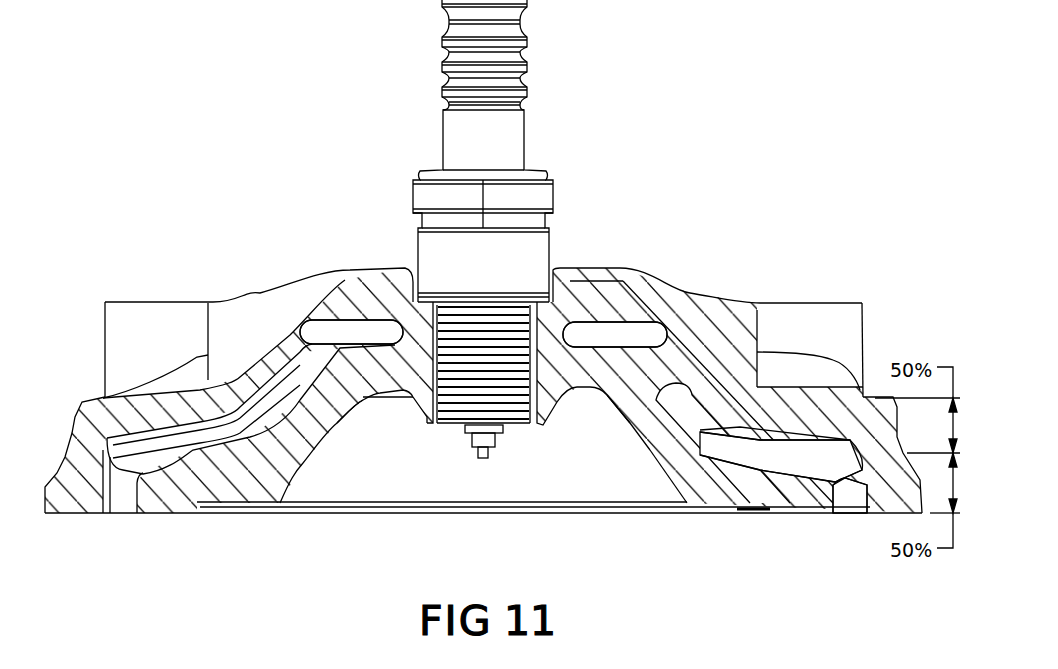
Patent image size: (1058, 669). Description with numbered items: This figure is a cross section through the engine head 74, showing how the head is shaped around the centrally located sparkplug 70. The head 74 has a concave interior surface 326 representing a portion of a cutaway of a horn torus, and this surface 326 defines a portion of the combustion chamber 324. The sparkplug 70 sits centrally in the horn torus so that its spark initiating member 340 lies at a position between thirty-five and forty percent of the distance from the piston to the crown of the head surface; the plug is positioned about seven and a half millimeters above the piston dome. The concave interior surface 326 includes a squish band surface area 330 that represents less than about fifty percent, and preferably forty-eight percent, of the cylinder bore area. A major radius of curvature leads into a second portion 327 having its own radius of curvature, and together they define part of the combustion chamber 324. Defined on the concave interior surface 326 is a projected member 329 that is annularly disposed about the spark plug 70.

The sparkplug 70 is at (460, 142).
The engine head 74 is at (653, 303).
The combustion chamber 324 is at (397, 470).
The concave interior surface 326 is at (665, 497).
The second portion 327 is at (650, 450).
The projected member 329 is at (380, 395).
The squish band surface area 330 is at (740, 510).
The spark initiating member 340 is at (483, 460).